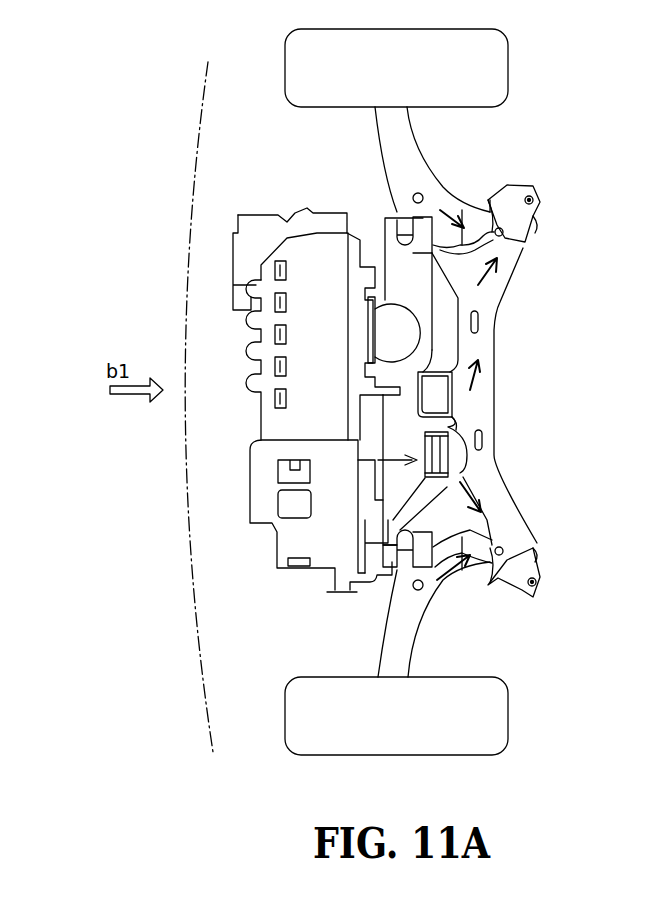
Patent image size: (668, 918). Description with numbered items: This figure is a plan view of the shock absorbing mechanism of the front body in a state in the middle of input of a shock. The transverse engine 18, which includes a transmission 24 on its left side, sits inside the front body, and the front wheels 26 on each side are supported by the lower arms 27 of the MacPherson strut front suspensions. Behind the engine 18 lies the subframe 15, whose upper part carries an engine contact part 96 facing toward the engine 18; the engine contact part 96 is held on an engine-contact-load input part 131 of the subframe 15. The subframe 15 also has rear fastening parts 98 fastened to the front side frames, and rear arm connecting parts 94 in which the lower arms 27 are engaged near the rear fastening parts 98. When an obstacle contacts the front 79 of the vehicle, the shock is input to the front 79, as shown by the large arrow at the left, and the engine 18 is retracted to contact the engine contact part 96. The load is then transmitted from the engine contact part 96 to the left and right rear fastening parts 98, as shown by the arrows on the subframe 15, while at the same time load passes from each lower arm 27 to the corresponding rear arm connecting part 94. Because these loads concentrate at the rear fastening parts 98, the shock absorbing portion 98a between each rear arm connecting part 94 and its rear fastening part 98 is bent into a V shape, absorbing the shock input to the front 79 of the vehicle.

The subframe 15 is at (528, 324).
The engine 18 is at (262, 180).
The transmission 24 is at (256, 483).
The front wheel 26 is at (287, 72).
The lower arm 27 is at (377, 133).
The front of the vehicle 79 is at (190, 200).
The rear arm connecting part 94 is at (497, 200).
The engine contact part 96 is at (456, 425).
The rear fastening part 98 is at (520, 188).
The shock absorbing portion 98a is at (540, 233).
The engine-contact-load input part 131 is at (457, 442).